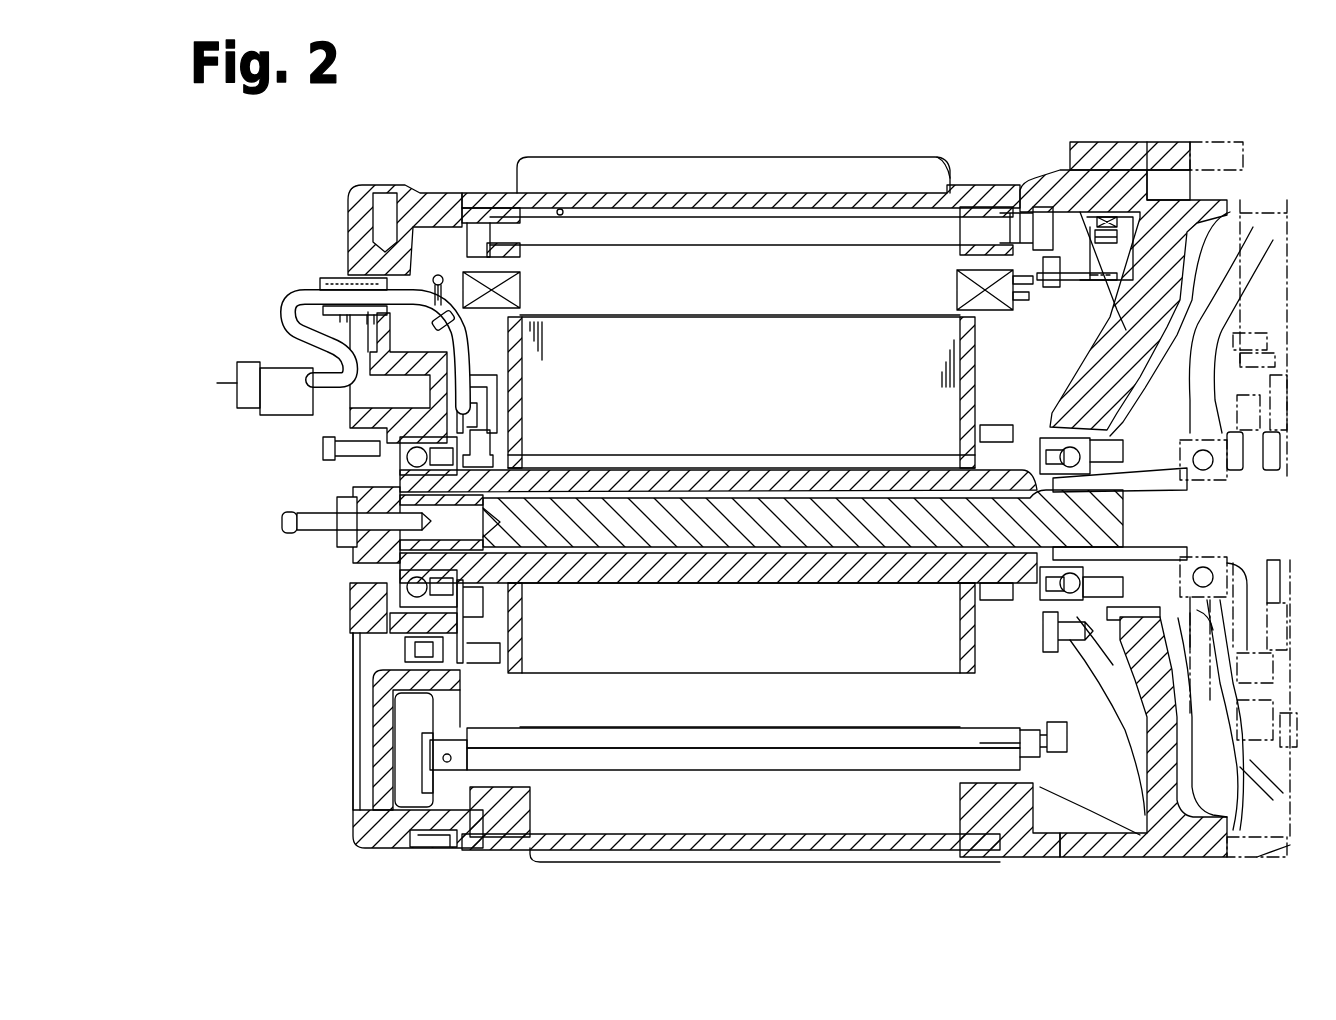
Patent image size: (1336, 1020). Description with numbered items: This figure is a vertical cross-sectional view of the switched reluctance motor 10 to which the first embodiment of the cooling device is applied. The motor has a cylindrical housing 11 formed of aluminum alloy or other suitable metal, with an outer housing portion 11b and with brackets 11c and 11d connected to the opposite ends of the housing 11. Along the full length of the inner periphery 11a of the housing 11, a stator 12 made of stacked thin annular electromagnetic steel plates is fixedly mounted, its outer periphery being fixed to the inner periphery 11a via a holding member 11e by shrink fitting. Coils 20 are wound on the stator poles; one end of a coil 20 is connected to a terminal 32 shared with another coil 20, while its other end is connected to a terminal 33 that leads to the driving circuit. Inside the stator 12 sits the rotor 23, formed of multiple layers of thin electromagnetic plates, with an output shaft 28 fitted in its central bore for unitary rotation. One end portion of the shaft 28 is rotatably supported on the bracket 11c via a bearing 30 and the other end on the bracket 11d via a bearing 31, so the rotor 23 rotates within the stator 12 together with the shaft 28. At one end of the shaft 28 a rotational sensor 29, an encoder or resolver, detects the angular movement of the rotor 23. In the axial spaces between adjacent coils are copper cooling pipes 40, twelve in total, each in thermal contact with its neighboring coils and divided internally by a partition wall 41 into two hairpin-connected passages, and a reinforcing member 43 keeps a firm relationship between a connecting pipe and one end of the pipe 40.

The switched reluctance motor 10 is at (632, 153).
The cylindrical housing 11 is at (967, 197).
The inner periphery 11a is at (567, 210).
The housing outer cover 11b is at (788, 165).
The bracket 11c is at (437, 227).
The bracket 11d is at (1160, 150).
The holding member 11e is at (488, 210).
The stator 12 is at (884, 262).
The coil 20 is at (993, 278).
The rotor 23 is at (722, 343).
The output shaft 28 is at (390, 487).
The rotational sensor 29 is at (450, 384).
The bearing 30 is at (383, 598).
The bearing 31 is at (1140, 490).
The terminal 32 is at (1030, 293).
The terminal 33 is at (1080, 237).
The cooling pipe 40 is at (837, 770).
The partition wall 41 is at (758, 757).
The reinforcing member 43 is at (425, 757).